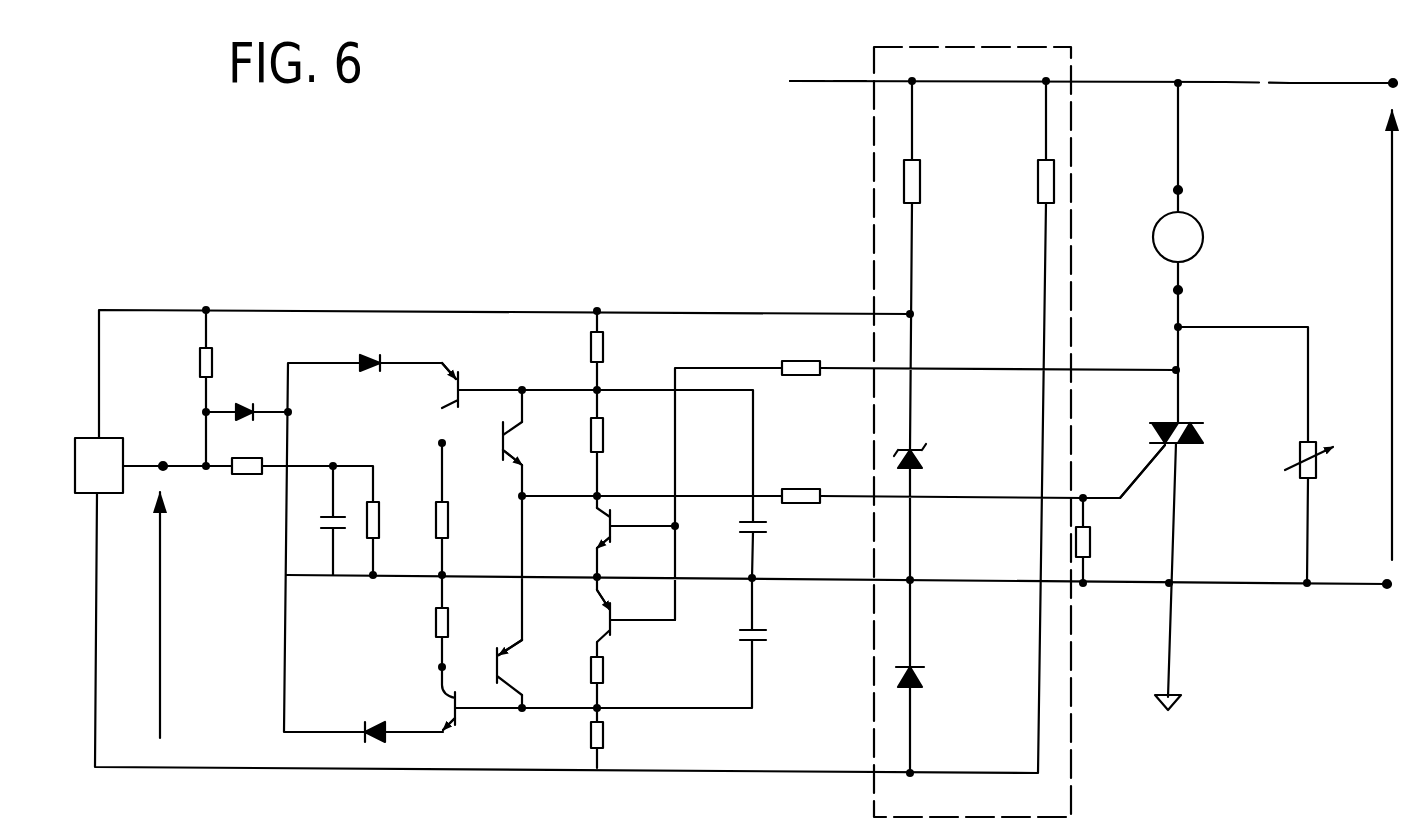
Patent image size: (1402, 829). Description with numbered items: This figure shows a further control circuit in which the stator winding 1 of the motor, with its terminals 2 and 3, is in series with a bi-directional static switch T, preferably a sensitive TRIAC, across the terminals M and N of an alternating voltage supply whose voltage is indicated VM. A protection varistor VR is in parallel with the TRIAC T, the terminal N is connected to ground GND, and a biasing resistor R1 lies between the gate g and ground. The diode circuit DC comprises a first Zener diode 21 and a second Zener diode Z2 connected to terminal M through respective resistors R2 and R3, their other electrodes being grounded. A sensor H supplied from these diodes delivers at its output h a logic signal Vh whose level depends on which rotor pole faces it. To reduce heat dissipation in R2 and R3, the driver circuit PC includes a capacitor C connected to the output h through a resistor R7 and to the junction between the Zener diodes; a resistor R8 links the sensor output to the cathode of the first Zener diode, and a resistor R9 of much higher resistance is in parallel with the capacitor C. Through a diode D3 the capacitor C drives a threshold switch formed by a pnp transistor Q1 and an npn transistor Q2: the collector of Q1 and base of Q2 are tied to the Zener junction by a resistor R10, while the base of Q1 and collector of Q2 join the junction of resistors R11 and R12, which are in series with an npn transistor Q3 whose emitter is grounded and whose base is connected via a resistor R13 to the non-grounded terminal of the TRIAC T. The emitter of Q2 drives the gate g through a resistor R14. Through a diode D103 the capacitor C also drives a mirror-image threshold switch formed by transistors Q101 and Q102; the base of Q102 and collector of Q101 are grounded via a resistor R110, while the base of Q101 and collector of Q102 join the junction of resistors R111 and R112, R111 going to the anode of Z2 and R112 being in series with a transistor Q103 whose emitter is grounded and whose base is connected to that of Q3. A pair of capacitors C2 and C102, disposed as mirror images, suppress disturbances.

The sensor H is at (92, 497).
The output of the sensor h is at (163, 462).
The resistor R8 is at (200, 360).
The resistor R7 is at (247, 474).
The capacitor C is at (333, 525).
The resistor R9 is at (375, 520).
The resistor R10 is at (444, 520).
The diode D3 is at (362, 360).
The transistor Q1 is at (447, 378).
The transistor Q2 is at (512, 448).
The transistor Q3 is at (603, 527).
The transistor Q103 is at (603, 622).
The transistor Q102 is at (507, 660).
The transistor Q101 is at (462, 725).
The resistor R110 is at (445, 625).
The resistor R112 is at (604, 668).
The resistor R111 is at (604, 735).
The resistor R11 is at (604, 348).
The resistor R12 is at (604, 437).
The resistor R13 is at (805, 372).
The resistor R14 is at (800, 494).
The capacitor C2 is at (760, 530).
The capacitor C102 is at (758, 640).
The driver circuit PC is at (700, 348).
The sensor output voltage Vh is at (162, 652).
The diode D103 is at (375, 725).
The diode circuit DC is at (960, 47).
The resistor R2 is at (920, 182).
The resistor R3 is at (1038, 185).
The Zener diode 21 is at (920, 462).
The Zener diode Z2 is at (920, 688).
The biasing resistor R1 is at (1090, 545).
The gate g is at (1135, 480).
The bi-directional static switch T is at (1188, 425).
The terminal of the stator winding 2 is at (1181, 190).
The stator winding 1 is at (1203, 235).
The terminal of the stator winding 3 is at (1181, 290).
The protection varistor VR is at (1300, 475).
The ground GND is at (1180, 700).
The supply terminal M is at (1393, 82).
The supply terminal N is at (1386, 587).
The alternating supply voltage VM is at (1388, 272).